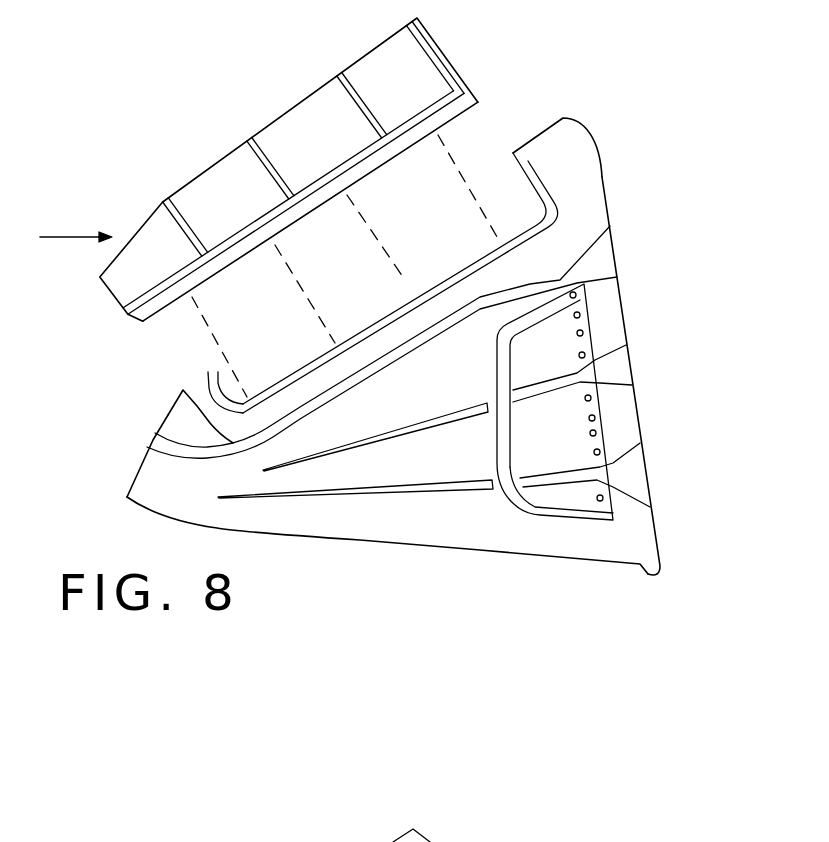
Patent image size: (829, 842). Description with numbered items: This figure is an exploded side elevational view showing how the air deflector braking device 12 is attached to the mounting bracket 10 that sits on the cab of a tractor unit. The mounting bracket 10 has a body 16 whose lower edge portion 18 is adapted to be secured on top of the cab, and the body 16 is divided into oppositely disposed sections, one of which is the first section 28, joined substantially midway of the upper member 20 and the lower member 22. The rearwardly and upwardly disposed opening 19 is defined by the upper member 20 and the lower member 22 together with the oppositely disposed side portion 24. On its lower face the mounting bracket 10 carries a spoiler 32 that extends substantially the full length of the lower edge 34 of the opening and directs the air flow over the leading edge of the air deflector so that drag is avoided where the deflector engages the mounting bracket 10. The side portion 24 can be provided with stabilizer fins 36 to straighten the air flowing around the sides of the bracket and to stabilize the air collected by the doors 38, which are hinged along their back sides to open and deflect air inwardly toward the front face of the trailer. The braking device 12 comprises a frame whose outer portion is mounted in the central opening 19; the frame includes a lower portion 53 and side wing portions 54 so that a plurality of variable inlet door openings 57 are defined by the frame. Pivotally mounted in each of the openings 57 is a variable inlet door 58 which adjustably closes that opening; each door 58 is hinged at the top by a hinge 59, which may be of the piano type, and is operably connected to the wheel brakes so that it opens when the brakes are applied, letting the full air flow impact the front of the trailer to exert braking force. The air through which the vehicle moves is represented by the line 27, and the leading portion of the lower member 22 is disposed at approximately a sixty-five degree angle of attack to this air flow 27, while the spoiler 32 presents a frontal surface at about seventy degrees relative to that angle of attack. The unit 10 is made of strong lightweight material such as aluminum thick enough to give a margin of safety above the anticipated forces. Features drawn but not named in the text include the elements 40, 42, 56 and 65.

The mounting bracket 10 is at (648, 240).
The braking device 12 is at (455, 50).
The body 16 is at (633, 344).
The lower edge portion 18 is at (270, 532).
The rearwardly and upwardly disposed opening 19 is at (455, 283).
The upper member 20 is at (533, 139).
The lower member 22 is at (127, 493).
The oppositely disposed portion 24 is at (400, 411).
The angle of attack of the air flow 27 is at (85, 237).
The first section 28 is at (651, 520).
The spoiler 32 is at (168, 418).
The lower edge of the opening 34 is at (205, 358).
The stabilizer fins 36 is at (397, 433).
The doors 38 is at (585, 320).
The frame 40 is at (537, 522).
The frame member 42 is at (513, 443).
The lower portion of the frame 53 is at (100, 277).
The side wing portion 54 is at (337, 197).
The divider 56 is at (343, 72).
The variable inlet door openings 57 is at (290, 199).
The variable inlet door 58 is at (203, 221).
The hinge 59 is at (313, 93).
The end cap 65 is at (455, 68).